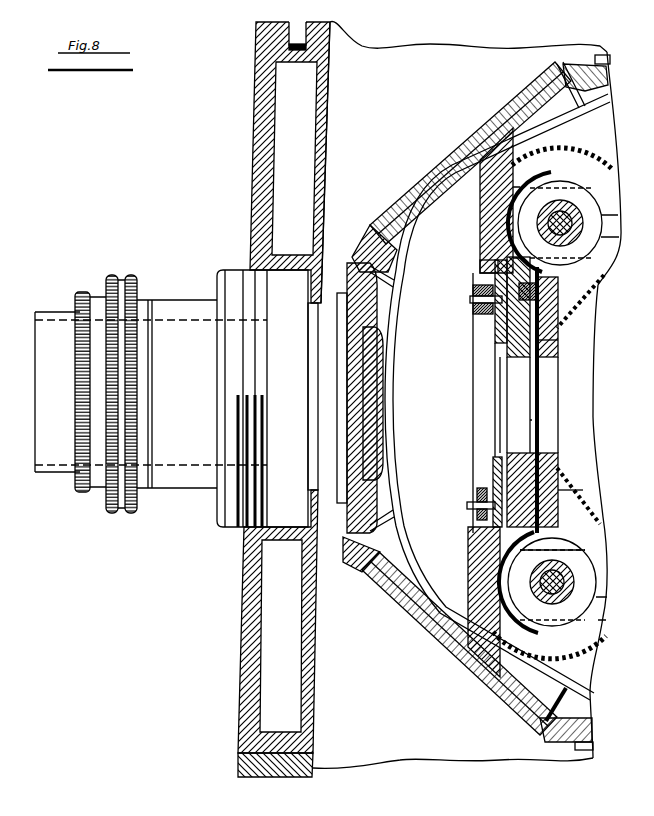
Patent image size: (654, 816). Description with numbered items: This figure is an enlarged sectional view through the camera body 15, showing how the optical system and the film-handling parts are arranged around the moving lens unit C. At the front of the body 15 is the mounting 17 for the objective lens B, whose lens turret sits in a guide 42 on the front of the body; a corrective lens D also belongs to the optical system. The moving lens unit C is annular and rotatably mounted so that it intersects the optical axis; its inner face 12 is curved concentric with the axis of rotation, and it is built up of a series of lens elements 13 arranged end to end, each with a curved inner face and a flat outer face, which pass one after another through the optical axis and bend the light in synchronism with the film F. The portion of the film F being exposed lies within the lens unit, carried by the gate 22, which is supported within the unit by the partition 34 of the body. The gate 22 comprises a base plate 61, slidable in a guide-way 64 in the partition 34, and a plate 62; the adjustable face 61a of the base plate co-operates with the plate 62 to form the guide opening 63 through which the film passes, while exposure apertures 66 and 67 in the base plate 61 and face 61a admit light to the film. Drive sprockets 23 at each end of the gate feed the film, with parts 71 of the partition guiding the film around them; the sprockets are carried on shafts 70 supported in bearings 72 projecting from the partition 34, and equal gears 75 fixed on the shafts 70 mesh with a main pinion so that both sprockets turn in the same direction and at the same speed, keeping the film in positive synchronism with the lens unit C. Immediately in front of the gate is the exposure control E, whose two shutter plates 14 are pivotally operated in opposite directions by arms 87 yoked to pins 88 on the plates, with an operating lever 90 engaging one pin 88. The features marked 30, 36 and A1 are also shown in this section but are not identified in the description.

The inner face 12 is at (438, 182).
The lens elements 13 is at (392, 218).
The shutter plates 14 is at (498, 332).
The body 15 is at (334, 95).
The mounting 17 is at (233, 650).
The gate 22 is at (560, 472).
The drive sprockets 23 is at (600, 211).
The housing wall 30 is at (322, 138).
The partition 34 is at (473, 600).
The bracket 36 is at (479, 270).
The guide 42 is at (240, 768).
The base plate 61 is at (560, 325).
The adjustable face 61a is at (584, 490).
The plate 62 is at (560, 341).
The guide opening 63 is at (560, 455).
The guide-way 64 is at (482, 549).
The exposure aperture 66 is at (514, 350).
The exposure aperture 67 is at (532, 432).
The shafts 70 is at (585, 226).
The parts of the partition 71 is at (492, 228).
The bearings 72 is at (590, 556).
The gears 75 is at (585, 168).
The arms 87 is at (495, 320).
The pins 88 is at (473, 291).
The operating lever 90 is at (473, 307).
The shaft A1 is at (256, 200).
The objective lens B is at (197, 478).
The moving lens unit C is at (378, 302).
The corrective lens D is at (378, 408).
The exposure control E is at (500, 350).
The film F is at (546, 403).